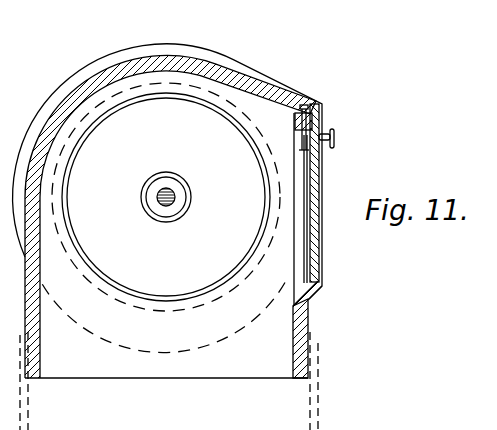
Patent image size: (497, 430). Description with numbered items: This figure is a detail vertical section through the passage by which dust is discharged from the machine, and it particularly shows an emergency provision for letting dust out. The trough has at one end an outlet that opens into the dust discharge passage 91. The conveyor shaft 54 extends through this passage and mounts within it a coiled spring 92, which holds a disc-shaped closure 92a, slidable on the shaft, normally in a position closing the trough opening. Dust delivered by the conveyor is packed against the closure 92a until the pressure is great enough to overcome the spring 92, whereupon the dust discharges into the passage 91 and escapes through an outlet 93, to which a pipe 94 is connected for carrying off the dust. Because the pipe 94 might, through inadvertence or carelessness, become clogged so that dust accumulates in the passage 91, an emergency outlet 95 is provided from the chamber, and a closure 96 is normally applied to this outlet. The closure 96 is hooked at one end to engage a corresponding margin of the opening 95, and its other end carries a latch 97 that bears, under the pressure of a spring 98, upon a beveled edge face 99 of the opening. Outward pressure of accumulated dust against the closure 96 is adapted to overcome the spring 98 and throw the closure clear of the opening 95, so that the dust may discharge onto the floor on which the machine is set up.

The dust discharge passage 91 is at (112, 122).
The disc-shaped closure 92a is at (188, 97).
The coiled spring 92 is at (188, 190).
The conveyor shaft 54 is at (152, 200).
The beveled edge face 99 is at (307, 112).
The latch 97 is at (306, 106).
The spring 98 is at (322, 125).
The closure 96 is at (314, 199).
The outlet 95 is at (300, 306).
The outlet 93 is at (280, 354).
The pipe 94 is at (320, 401).